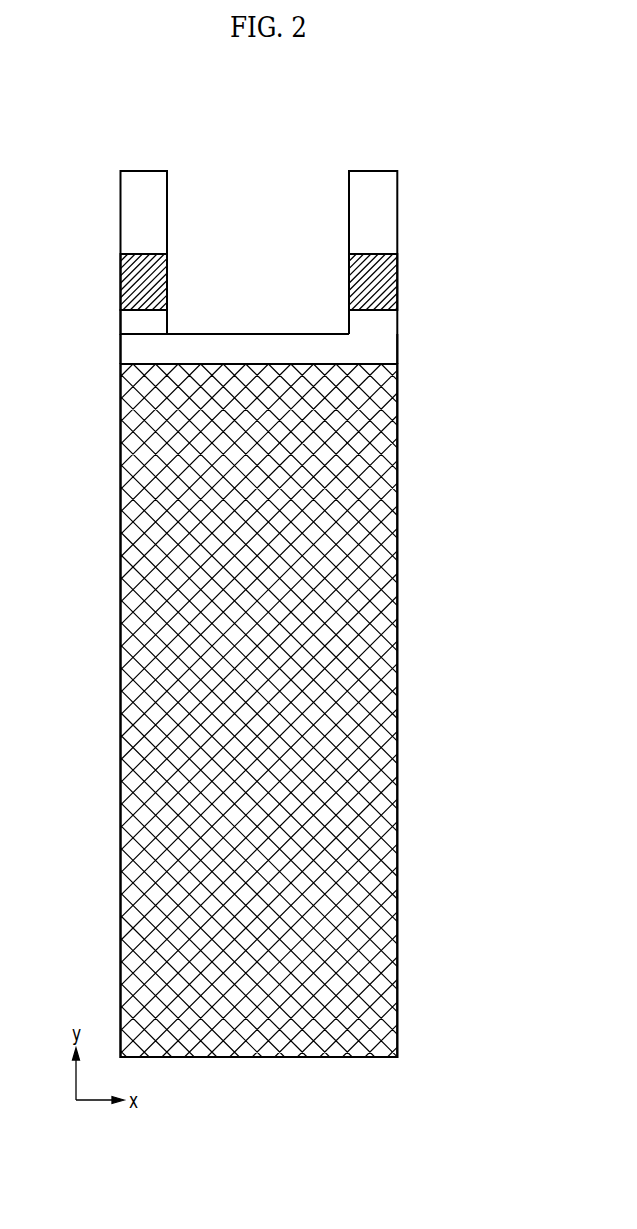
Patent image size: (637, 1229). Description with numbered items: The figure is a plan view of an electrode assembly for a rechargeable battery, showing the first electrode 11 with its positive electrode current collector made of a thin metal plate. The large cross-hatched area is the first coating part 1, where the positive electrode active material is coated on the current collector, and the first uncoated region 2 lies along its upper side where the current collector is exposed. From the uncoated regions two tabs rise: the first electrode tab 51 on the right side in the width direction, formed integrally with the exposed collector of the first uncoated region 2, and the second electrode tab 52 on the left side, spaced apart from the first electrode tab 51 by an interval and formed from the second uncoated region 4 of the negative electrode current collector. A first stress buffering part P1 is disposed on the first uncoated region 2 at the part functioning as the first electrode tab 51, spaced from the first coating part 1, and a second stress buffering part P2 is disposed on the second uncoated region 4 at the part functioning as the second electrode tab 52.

The first coating part 1 is at (383, 388).
The first uncoated region 2 is at (383, 334).
The second uncoated region 4 is at (127, 322).
The first electrode 11 is at (466, 335).
The first electrode tab 51 is at (372, 171).
The second electrode tab 52 is at (143, 171).
The first stress buffering part P1 is at (385, 282).
The second stress buffering part P2 is at (128, 280).